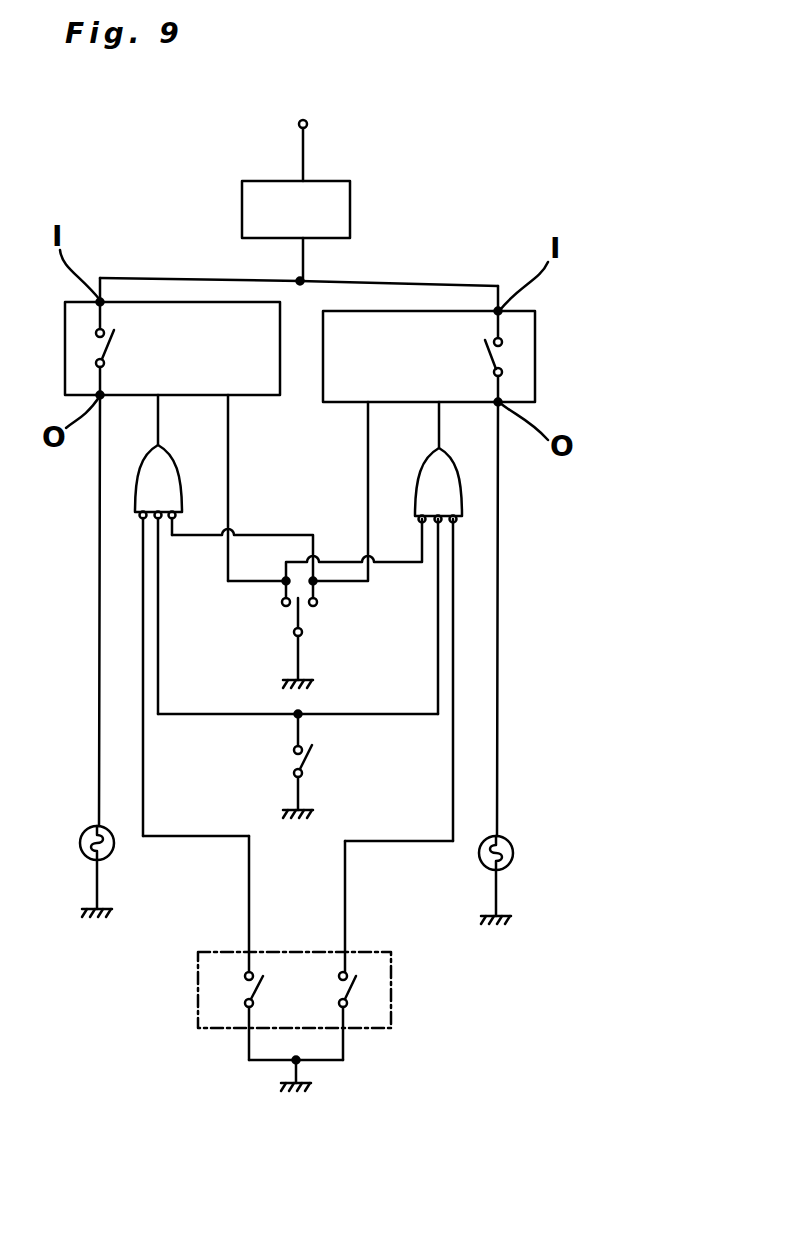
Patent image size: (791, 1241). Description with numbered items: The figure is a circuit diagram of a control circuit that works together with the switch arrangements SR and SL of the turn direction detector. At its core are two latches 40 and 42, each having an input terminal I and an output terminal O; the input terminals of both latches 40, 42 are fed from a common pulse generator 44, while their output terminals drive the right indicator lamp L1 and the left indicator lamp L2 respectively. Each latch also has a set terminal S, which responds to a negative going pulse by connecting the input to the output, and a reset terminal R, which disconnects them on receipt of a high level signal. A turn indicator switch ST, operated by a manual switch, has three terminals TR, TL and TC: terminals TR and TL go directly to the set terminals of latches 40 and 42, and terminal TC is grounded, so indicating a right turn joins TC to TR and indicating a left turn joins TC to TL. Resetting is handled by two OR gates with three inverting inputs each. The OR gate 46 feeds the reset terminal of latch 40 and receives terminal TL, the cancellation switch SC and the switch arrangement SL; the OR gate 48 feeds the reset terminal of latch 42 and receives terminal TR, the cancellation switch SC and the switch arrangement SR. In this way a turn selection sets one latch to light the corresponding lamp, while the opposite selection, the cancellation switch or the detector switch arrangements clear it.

The pulse generator 44 is at (350, 181).
The latch 42 is at (172, 338).
The latch 40 is at (429, 346).
The OR gate 48 is at (158, 457).
The OR gate 46 is at (438, 462).
The terminal TL is at (281, 602).
The terminal TR is at (318, 602).
The turn indicator switch ST is at (277, 616).
The terminal TC is at (294, 638).
The cancellation switch SC is at (294, 759).
The left indicator lamp L2 is at (76, 656).
The right indicator lamp L1 is at (517, 663).
The switch arrangement SR is at (246, 992).
The switch arrangement SL is at (350, 987).